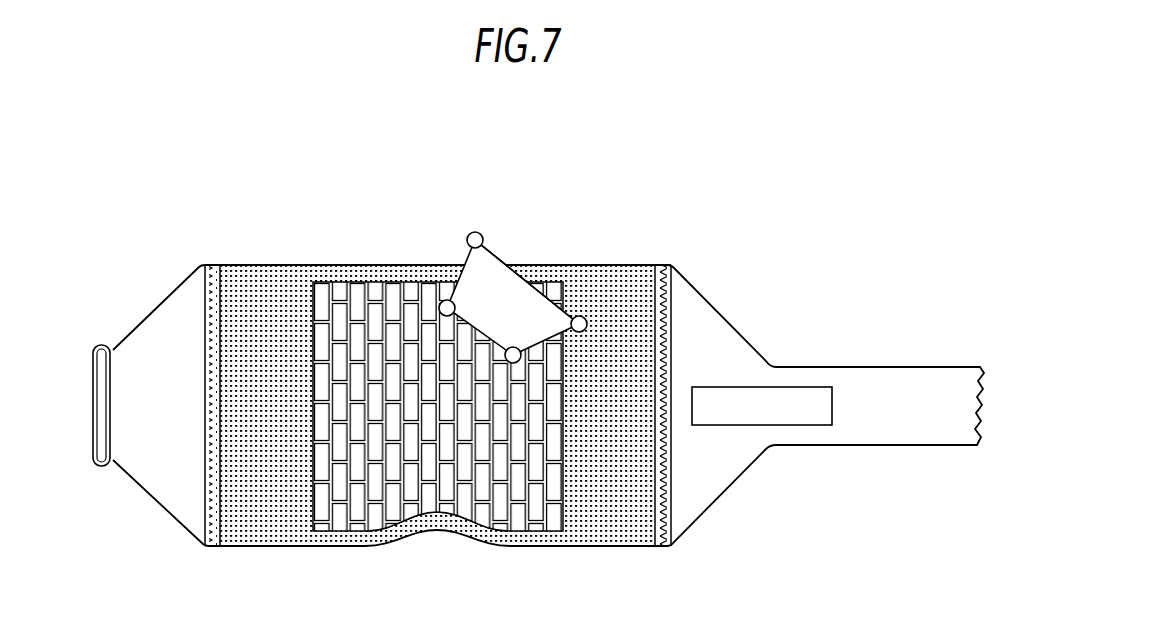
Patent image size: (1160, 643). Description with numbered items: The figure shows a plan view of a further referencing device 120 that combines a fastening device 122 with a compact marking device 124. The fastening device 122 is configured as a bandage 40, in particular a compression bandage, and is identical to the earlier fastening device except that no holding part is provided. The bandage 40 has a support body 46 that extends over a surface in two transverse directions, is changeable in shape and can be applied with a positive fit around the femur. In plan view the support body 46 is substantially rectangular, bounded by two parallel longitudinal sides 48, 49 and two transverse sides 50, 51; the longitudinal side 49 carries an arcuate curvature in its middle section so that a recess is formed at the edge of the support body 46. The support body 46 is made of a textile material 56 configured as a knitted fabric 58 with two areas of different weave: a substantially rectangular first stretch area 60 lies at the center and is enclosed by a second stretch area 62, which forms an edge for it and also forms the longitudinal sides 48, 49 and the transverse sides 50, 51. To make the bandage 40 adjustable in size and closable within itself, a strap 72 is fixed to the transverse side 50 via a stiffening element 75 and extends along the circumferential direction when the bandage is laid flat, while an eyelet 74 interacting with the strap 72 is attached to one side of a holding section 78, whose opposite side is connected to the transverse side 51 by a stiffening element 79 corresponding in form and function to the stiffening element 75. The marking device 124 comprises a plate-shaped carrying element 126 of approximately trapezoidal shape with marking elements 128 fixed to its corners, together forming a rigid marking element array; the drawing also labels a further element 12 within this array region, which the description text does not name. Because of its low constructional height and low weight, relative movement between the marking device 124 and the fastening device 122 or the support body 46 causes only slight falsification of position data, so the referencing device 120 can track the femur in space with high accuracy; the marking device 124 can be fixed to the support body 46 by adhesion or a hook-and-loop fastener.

The sensor 12 is at (466, 296).
The bandage 40 is at (755, 340).
The support body 46 is at (450, 412).
The longitudinal side 48 is at (312, 264).
The longitudinal side 49 is at (327, 548).
The transverse side 50 is at (660, 493).
The transverse side 51 is at (222, 488).
The textile material 56 is at (603, 520).
The knitted fabric 58 is at (533, 500).
The first stretch area 60 is at (440, 473).
The second stretch area 62 is at (282, 502).
The strap 72 is at (920, 397).
The eyelet 74 is at (93, 347).
The stiffening element 75 is at (662, 537).
The holding section 78 is at (168, 330).
The stiffening element 79 is at (213, 542).
The referencing device 120 is at (557, 278).
The fastening device 122 is at (723, 292).
The marking device 124 is at (498, 243).
The carrying element 126 is at (537, 307).
The marking elements 128 is at (470, 233).